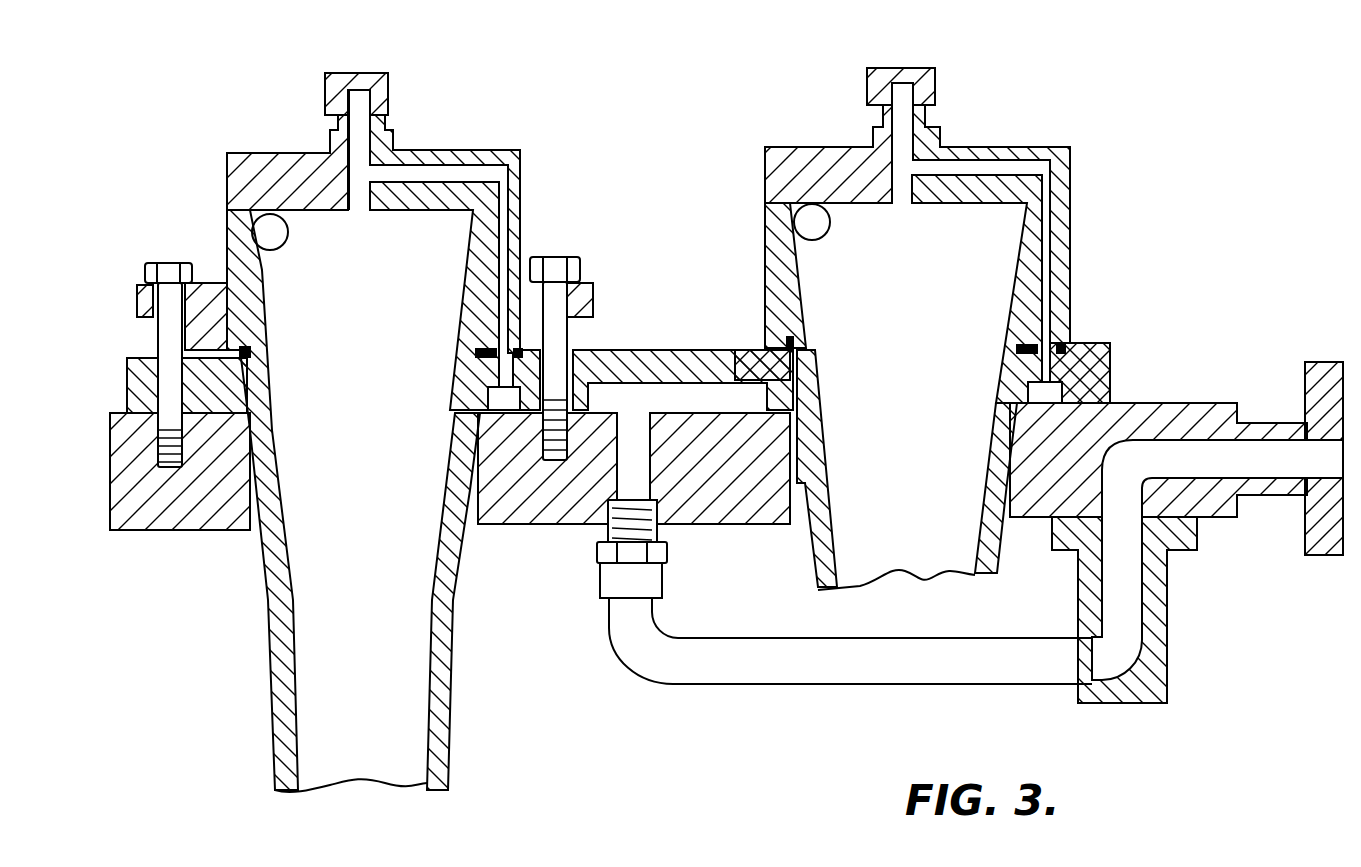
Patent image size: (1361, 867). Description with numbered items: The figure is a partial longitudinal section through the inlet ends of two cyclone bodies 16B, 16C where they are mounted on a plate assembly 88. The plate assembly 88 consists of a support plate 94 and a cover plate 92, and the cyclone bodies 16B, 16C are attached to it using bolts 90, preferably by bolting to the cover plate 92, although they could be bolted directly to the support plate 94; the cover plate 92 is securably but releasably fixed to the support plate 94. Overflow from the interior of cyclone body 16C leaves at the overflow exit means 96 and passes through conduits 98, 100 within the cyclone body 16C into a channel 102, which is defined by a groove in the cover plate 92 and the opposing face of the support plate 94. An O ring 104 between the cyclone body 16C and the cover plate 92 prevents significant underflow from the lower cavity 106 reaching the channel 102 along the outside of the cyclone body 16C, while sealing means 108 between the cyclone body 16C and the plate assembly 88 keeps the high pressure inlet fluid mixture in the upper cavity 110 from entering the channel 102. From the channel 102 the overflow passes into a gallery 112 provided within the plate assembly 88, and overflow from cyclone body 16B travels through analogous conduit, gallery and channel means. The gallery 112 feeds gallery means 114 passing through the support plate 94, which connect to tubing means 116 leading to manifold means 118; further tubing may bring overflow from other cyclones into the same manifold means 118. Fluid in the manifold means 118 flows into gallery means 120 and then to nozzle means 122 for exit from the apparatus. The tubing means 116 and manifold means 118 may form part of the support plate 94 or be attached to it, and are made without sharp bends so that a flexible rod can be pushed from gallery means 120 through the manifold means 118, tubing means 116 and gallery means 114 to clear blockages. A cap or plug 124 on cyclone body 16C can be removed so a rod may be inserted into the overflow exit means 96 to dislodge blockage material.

The cyclone body 16C is at (255, 160).
The cyclone body 16B is at (778, 173).
The lower cavity 106 is at (240, 558).
The upper cavity 110 is at (197, 212).
The cap or plug 124 is at (348, 72).
The conduit 98 is at (433, 175).
The conduit 100 is at (522, 207).
The gallery 112 is at (680, 397).
The cover plate 92 is at (1113, 347).
The support plate 94 is at (1173, 413).
The nozzle means 122 is at (1280, 458).
The gallery means 120 is at (1118, 560).
The manifold means 118 is at (1152, 653).
The tubing means 116 is at (723, 670).
The gallery means 114 is at (640, 475).
The plate assembly 88 is at (141, 527).
The bolts 90 is at (165, 272).
The overflow exit means 96 is at (360, 205).
The sealing means 108 is at (240, 350).
The O ring 104 is at (487, 358).
The channel 102 is at (492, 404).